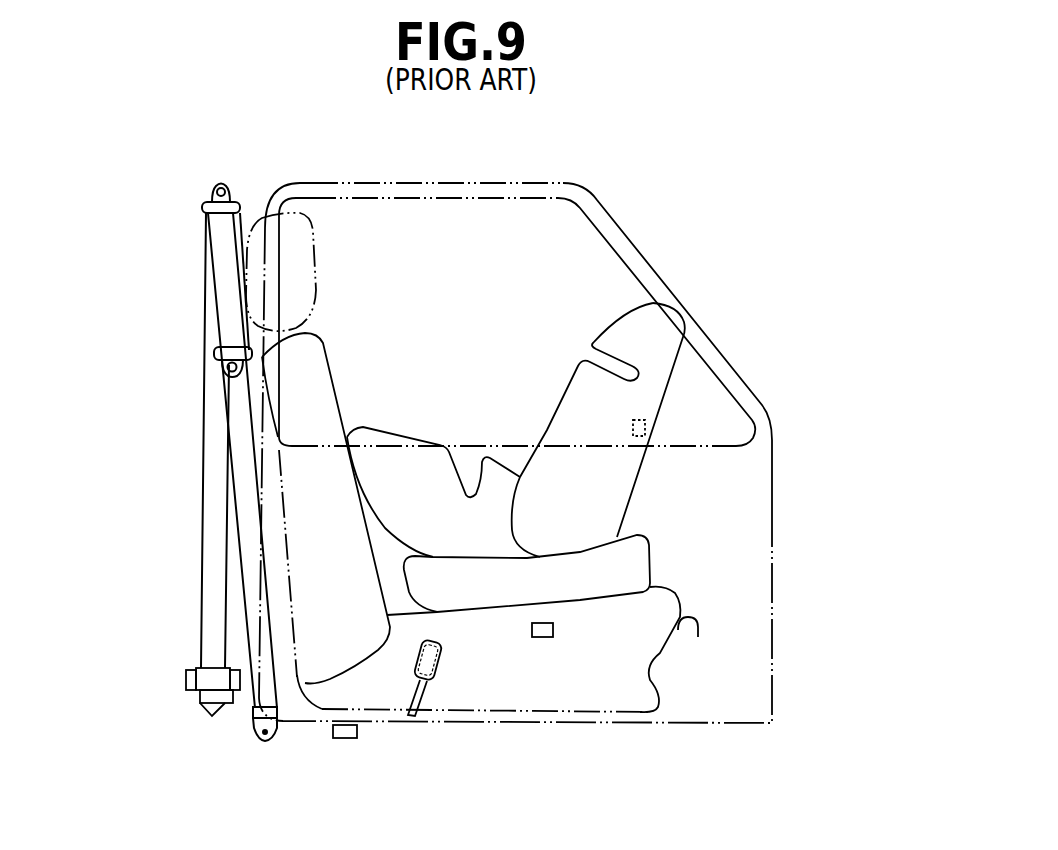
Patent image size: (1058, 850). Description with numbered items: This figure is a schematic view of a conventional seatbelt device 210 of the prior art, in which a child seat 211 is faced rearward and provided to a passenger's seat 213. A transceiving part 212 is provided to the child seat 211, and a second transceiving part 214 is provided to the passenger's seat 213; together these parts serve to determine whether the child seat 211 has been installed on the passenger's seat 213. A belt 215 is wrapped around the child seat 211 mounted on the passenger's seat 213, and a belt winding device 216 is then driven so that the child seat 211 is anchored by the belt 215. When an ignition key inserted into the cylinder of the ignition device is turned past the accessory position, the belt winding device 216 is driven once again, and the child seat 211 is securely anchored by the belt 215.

The seatbelt device 210 is at (617, 192).
The child seat 211 is at (548, 407).
The transceiving part 212 is at (645, 420).
The passenger's seat 213 is at (676, 593).
The transceiving part 214 is at (543, 638).
The belt 215 is at (213, 398).
The belt winding device 216 is at (177, 681).